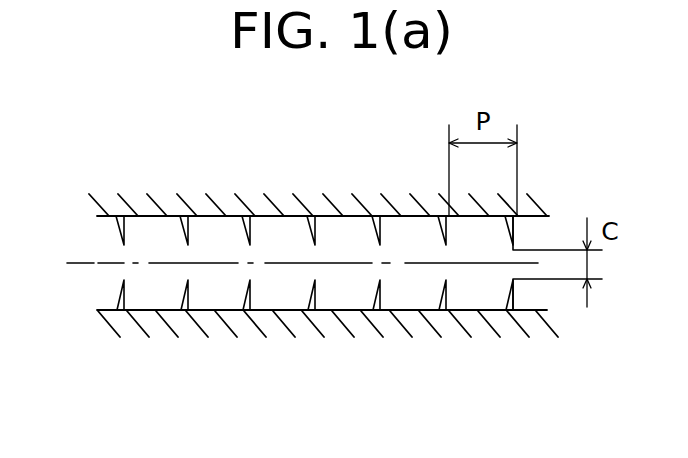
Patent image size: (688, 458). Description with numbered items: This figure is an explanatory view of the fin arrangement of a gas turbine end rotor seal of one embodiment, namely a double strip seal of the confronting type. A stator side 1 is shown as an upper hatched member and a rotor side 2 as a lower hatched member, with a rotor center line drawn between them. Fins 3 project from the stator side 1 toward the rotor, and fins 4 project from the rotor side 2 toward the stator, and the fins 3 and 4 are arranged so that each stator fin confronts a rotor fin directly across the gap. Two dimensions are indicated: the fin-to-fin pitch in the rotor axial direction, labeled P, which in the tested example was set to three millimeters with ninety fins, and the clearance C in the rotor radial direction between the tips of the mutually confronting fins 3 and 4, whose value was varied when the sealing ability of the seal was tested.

The stator side 1 is at (202, 197).
The rotor side 2 is at (185, 328).
The fins on stator side 3 is at (125, 236).
The fins on rotor side 4 is at (98, 306).